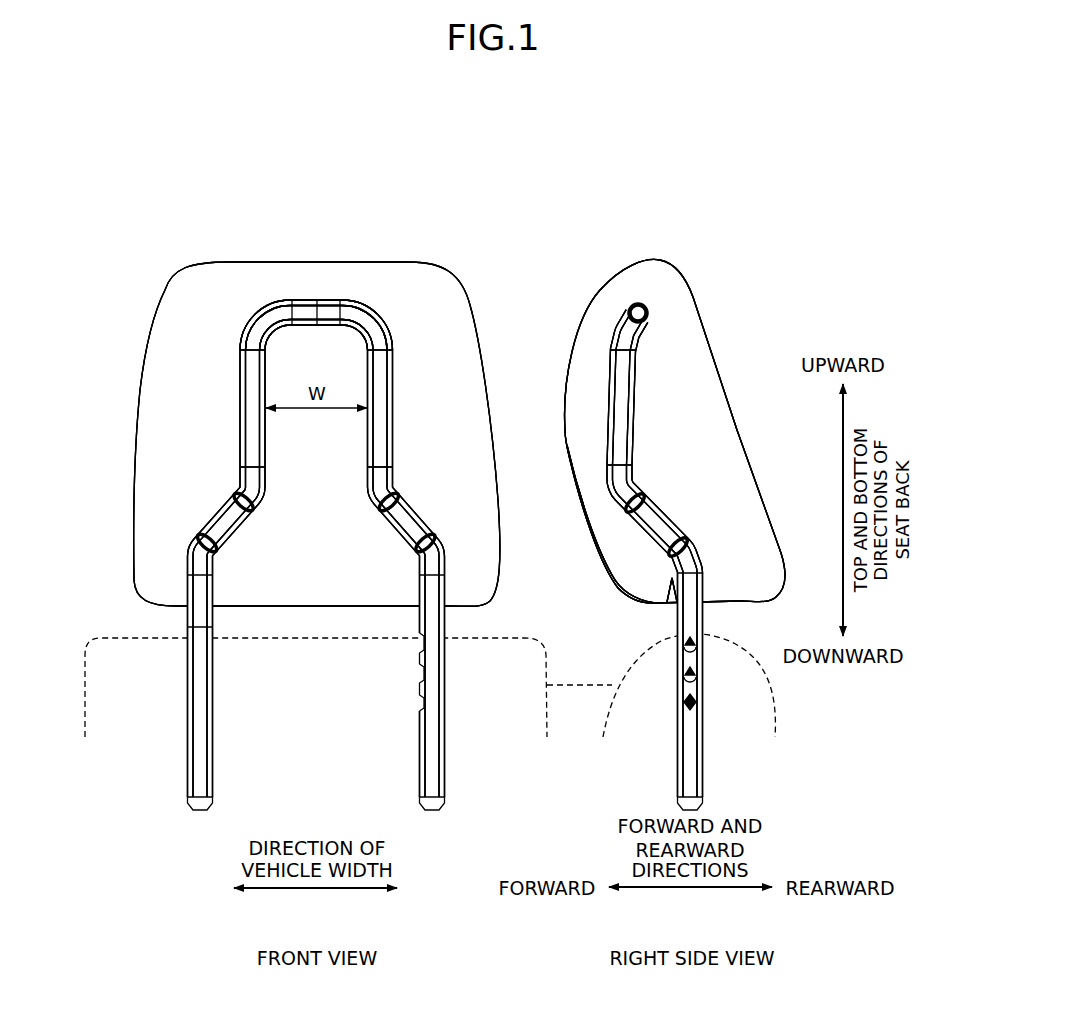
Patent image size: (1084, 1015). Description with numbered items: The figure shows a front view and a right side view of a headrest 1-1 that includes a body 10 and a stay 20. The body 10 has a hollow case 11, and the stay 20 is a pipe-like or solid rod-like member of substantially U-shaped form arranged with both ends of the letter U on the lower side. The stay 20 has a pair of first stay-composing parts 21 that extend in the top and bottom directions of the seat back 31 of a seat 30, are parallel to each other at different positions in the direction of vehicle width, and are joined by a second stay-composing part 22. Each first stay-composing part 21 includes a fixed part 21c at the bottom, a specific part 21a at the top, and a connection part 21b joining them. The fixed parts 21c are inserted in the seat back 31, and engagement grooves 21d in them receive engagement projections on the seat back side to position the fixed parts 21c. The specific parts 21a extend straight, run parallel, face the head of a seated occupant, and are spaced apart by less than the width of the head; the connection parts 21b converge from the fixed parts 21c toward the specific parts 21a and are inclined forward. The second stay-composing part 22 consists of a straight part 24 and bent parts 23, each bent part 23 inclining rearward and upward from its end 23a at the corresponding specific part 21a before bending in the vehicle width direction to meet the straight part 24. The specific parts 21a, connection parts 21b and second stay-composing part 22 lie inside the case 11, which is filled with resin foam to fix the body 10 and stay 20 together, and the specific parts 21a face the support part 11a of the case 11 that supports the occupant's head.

The headrest 1-1 is at (425, 262).
The body 10 is at (479, 311).
The case 11 is at (483, 337).
The support part 11a is at (566, 357).
The stay 20 is at (355, 289).
The first stay-composing part 21 is at (236, 395).
The specific part 21a is at (240, 423).
The connection part 21b is at (413, 507).
The fixed part 21c is at (446, 735).
The engagement groove 21d is at (419, 700).
The second stay-composing part 22 is at (323, 291).
The bent part 23 is at (267, 305).
The end 23a is at (610, 330).
The straight part 24 is at (307, 300).
The seat 30 is at (627, 647).
The seat back 31 is at (582, 686).